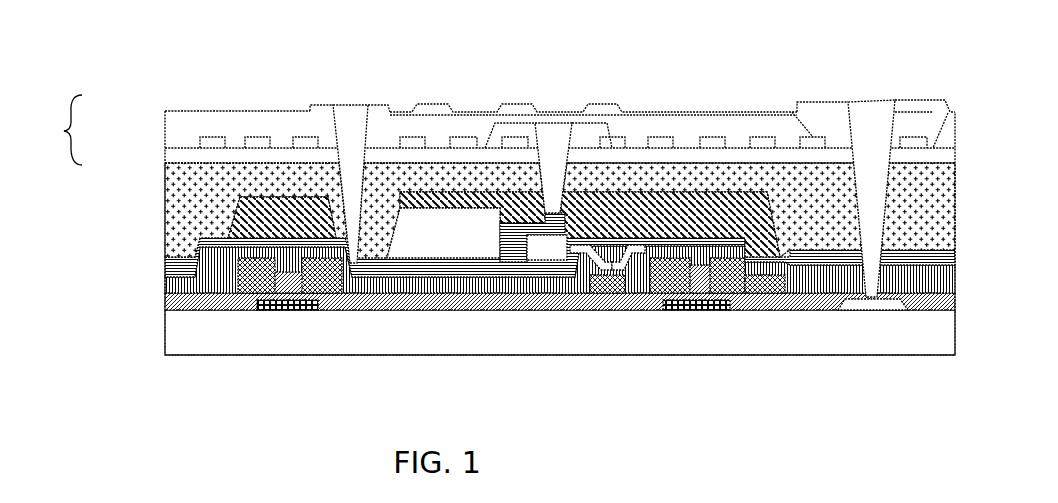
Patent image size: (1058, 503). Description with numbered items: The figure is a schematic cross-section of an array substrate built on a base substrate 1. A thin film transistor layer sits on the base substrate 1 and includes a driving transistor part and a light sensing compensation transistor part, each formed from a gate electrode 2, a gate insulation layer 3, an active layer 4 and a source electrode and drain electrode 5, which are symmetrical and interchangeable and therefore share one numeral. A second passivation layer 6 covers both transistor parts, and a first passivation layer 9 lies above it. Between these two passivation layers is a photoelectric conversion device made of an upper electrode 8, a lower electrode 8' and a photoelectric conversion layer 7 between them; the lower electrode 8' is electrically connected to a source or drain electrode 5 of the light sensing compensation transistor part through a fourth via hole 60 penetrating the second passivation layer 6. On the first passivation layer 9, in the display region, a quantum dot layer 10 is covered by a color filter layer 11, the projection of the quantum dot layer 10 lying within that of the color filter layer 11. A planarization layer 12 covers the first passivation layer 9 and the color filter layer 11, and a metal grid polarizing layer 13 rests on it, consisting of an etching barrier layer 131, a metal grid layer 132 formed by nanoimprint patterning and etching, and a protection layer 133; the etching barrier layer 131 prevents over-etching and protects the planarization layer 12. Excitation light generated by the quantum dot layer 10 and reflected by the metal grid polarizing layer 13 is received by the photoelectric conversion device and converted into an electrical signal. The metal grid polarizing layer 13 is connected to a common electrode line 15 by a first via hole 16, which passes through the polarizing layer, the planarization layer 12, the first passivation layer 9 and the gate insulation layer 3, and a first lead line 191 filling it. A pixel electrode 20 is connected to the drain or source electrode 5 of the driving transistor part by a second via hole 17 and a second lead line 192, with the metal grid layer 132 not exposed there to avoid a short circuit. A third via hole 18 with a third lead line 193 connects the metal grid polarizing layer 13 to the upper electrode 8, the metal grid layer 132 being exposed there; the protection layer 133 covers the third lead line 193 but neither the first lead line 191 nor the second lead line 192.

The base substrate 1 is at (176, 333).
The gate electrode 2 is at (291, 306).
The gate insulation layer 3 is at (176, 302).
The active layer 4 is at (266, 282).
The source electrode and drain electrode 5 is at (216, 297).
The second passivation layer 6 is at (176, 283).
The photoelectric conversion layer 7 is at (547, 256).
The upper electrode 8 is at (532, 308).
The lower electrode 8' is at (586, 324).
The first passivation layer 9 is at (176, 262).
The quantum dot layer 10 is at (437, 236).
The color filter layer 11 is at (236, 208).
The planarization layer 12 is at (177, 174).
The metal grid polarizing layer 13 is at (57, 130).
The etching barrier layer 131 is at (177, 157).
The metal grid layer 132 is at (207, 145).
The protection layer 133 is at (177, 127).
The common electrode line 15 is at (873, 304).
The first via hole 16 is at (869, 108).
The second via hole 17 is at (346, 111).
The third via hole 18 is at (549, 114).
The first lead line 191 is at (833, 118).
The second lead line 192 is at (312, 106).
The third lead line 193 is at (522, 125).
The pixel electrode 20 is at (435, 107).
The fourth via hole 60 is at (626, 270).